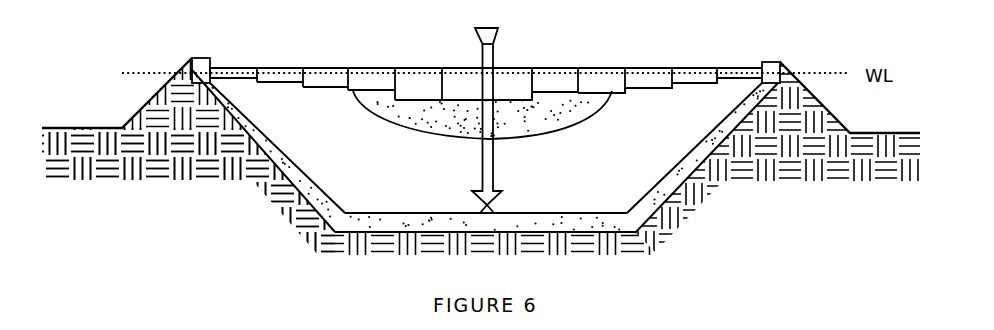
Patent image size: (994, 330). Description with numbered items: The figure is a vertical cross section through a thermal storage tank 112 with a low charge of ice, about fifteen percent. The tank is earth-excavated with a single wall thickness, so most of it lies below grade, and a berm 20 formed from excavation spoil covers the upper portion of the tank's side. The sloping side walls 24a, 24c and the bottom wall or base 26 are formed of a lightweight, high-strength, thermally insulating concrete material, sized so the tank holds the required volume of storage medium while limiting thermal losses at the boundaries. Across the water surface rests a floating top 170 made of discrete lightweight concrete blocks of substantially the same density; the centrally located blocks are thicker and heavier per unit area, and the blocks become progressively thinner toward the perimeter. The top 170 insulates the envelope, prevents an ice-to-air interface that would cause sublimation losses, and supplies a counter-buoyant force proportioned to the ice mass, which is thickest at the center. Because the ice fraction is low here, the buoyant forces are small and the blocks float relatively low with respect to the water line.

The berm 20 is at (146, 107).
The side wall 24a is at (289, 203).
The side wall 24c is at (682, 196).
The bottom wall or base 26 is at (364, 220).
The floating top 170 is at (325, 57).
The thermal storage tank 112 is at (564, 44).